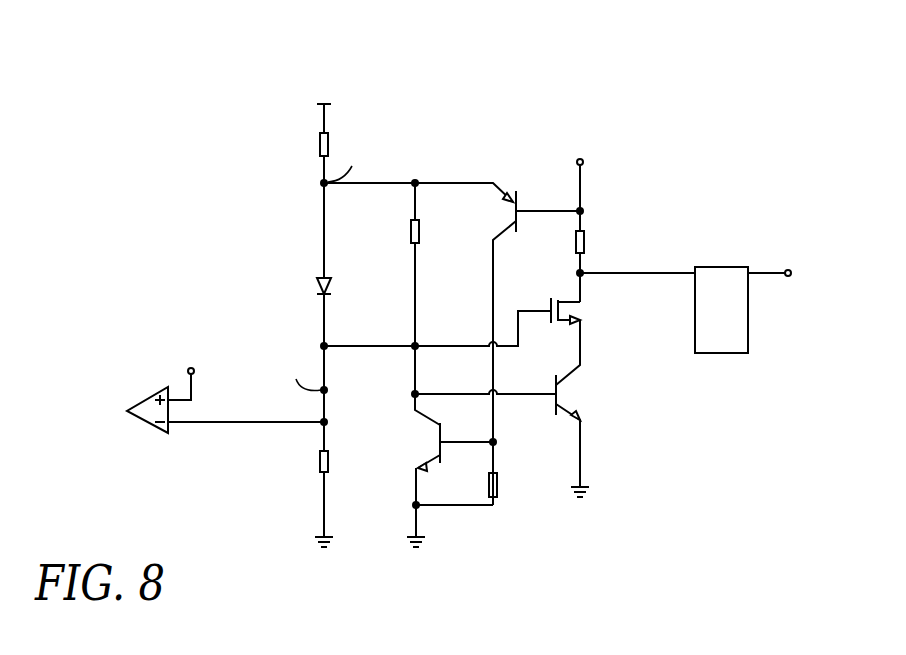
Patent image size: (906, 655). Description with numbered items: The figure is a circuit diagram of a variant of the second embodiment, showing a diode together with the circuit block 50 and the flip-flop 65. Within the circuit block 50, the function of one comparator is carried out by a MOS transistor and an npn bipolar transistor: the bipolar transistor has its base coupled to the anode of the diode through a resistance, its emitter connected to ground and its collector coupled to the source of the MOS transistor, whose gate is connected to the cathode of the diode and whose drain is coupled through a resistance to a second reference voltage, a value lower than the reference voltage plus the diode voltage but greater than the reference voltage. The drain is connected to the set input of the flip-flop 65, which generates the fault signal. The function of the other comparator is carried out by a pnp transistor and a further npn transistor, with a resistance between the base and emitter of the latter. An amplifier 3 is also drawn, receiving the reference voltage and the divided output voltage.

The circuit block 50 is at (453, 114).
The comparator (error amplifier) 3 is at (144, 414).
The flip-flop 65 is at (737, 331).